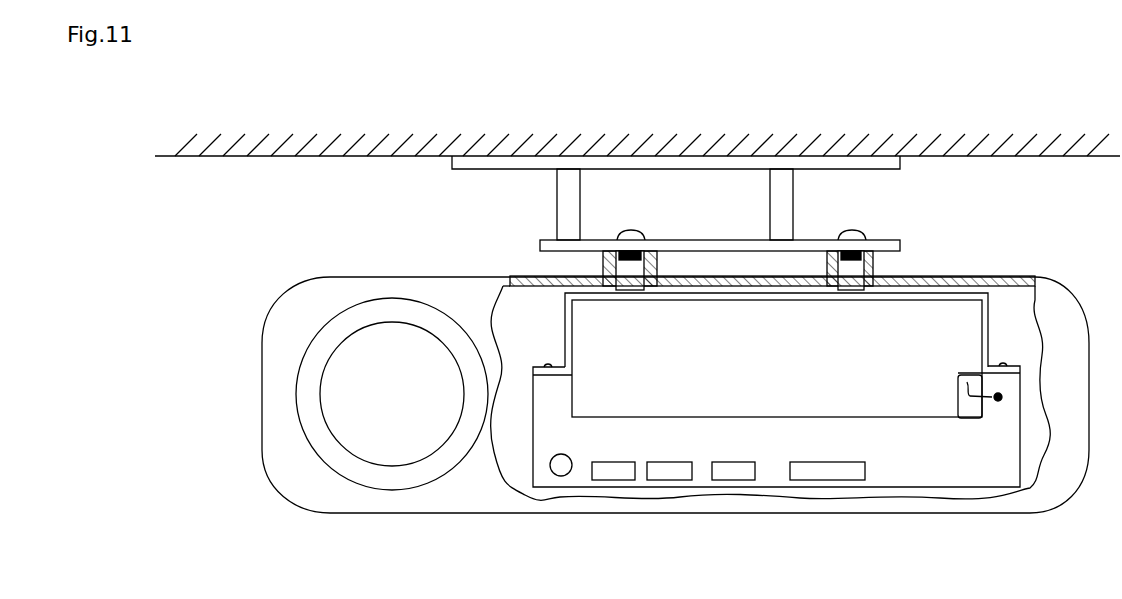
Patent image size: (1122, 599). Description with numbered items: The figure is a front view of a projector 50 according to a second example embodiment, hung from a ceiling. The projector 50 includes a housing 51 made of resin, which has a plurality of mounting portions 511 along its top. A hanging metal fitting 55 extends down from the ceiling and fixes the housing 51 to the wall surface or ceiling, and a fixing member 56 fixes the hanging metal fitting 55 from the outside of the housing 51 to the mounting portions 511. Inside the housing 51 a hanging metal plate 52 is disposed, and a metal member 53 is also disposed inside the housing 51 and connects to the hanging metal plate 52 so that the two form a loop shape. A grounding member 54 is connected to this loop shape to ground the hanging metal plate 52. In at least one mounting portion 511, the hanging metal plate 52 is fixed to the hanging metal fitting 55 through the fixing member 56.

The projector 50 is at (1035, 258).
The housing 51 is at (385, 287).
The hanging metal plate 52 is at (728, 300).
The metal member 53 is at (700, 426).
The grounding member 54 is at (978, 398).
The hanging metal fitting 55 is at (566, 206).
The fixing member 56 is at (631, 235).
The mounting portion 511 is at (657, 263).